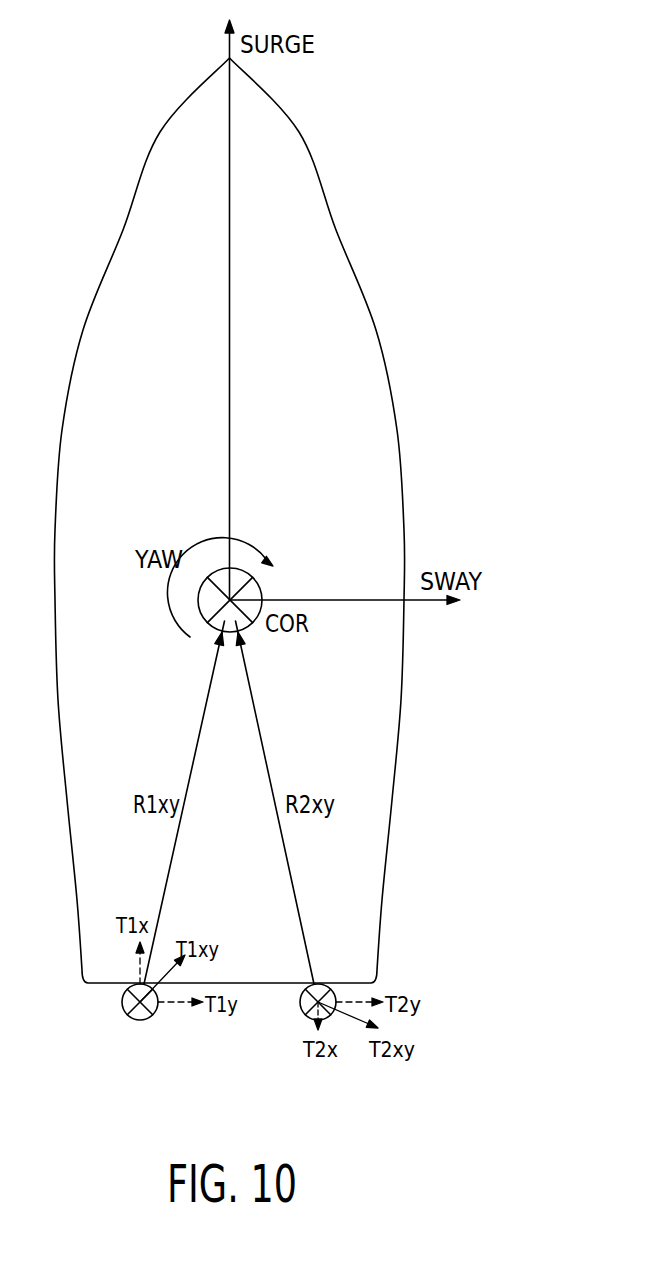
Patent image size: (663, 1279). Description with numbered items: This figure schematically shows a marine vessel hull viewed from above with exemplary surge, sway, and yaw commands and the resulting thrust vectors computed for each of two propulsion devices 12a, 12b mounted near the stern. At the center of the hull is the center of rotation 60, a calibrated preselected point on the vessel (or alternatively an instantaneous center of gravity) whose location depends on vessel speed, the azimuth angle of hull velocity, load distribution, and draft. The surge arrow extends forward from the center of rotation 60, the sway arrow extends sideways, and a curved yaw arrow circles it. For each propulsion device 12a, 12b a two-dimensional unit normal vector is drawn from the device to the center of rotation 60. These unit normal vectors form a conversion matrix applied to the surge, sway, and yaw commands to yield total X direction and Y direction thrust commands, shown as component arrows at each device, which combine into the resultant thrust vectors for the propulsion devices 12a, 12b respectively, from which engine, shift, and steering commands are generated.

The center of rotation (COR) 60 is at (258, 600).
The propulsion device 12a is at (123, 1001).
The propulsion device 12b is at (300, 1002).